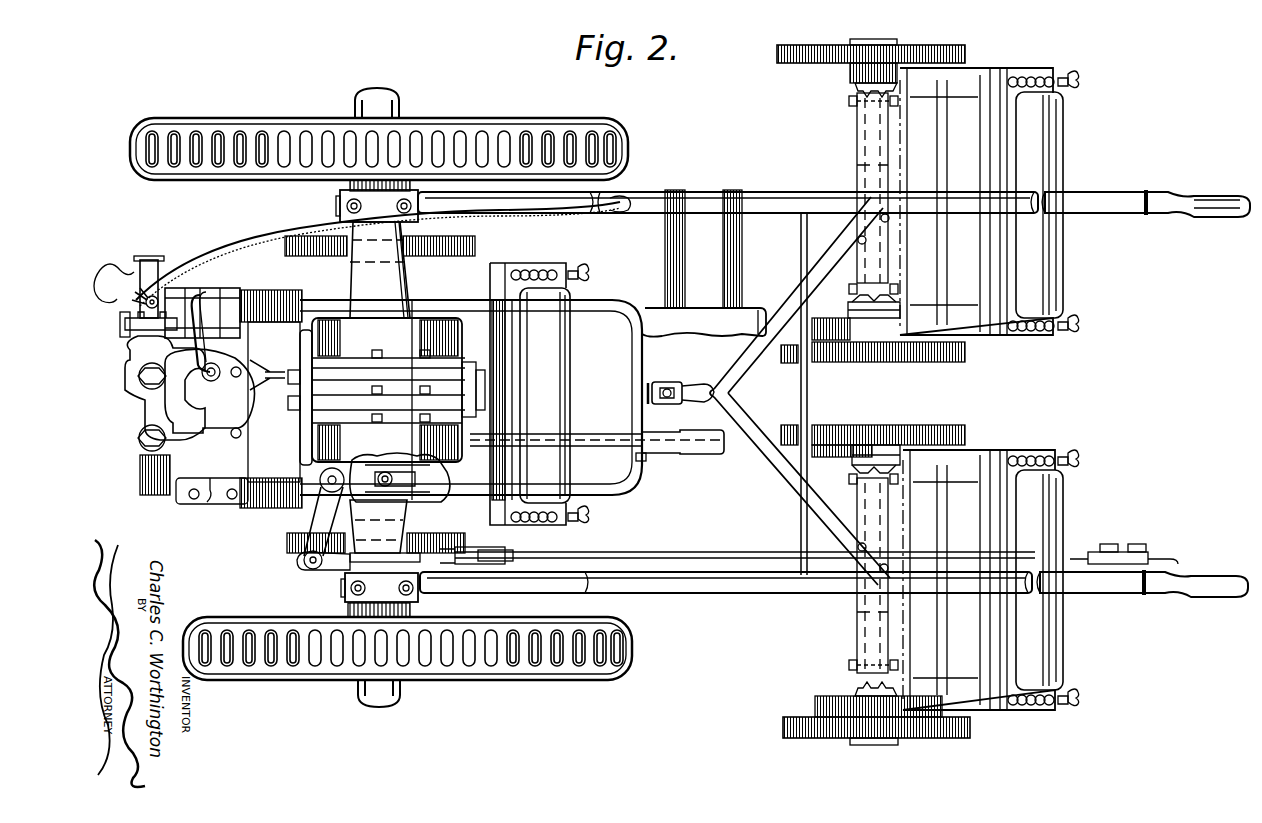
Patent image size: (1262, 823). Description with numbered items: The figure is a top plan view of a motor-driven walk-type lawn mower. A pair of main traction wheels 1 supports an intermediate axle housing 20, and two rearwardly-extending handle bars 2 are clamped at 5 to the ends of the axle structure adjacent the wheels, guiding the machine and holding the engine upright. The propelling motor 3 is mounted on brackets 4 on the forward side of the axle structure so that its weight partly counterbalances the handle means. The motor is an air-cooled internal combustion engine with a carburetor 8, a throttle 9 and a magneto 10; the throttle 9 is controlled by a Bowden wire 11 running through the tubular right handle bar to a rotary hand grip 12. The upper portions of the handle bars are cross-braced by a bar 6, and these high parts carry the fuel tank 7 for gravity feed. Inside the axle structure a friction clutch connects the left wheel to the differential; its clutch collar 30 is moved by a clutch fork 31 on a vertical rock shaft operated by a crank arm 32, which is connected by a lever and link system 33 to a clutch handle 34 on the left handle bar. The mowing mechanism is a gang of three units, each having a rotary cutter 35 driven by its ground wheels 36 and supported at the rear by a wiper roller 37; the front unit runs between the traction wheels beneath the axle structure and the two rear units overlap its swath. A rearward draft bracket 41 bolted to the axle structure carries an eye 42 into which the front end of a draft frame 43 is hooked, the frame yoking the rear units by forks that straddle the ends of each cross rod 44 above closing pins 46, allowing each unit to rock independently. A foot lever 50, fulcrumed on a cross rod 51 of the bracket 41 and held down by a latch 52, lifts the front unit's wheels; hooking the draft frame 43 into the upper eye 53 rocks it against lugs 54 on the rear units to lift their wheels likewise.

The traction wheels 1 is at (485, 130).
The handle bars 2 is at (1110, 198).
The propelling motor 3 is at (200, 430).
The brackets 4 is at (278, 314).
The clamps 5 is at (338, 204).
The cross-brace bar 6 is at (810, 396).
The fuel tank 7 is at (740, 322).
The carburetor 8 is at (155, 258).
The throttle 9 is at (168, 290).
The magneto 10 is at (185, 300).
The Bowden wire 11 is at (262, 252).
The rotary hand grip 12 is at (1205, 196).
The axle housing 20 is at (379, 387).
The clutch collar 30 is at (425, 520).
The clutch fork 31 is at (330, 488).
The crank arm 32 is at (305, 566).
The lever and link system 33 is at (530, 555).
The clutch handle 34 is at (1135, 550).
The rotary cutter 35 is at (985, 150).
The ground wheels 36 is at (779, 54).
The wiper roller 37 is at (1063, 162).
The draft bracket 41 is at (620, 310).
The eye 42 is at (676, 384).
The draft frame 43 is at (857, 128).
The cross rod 44 is at (857, 165).
The closing pins 46 is at (847, 101).
The foot lever 50 is at (690, 452).
The cross rod 51 is at (500, 358).
The latch 52 is at (648, 458).
The upper eye 53 is at (652, 386).
The lugs 54 is at (886, 320).